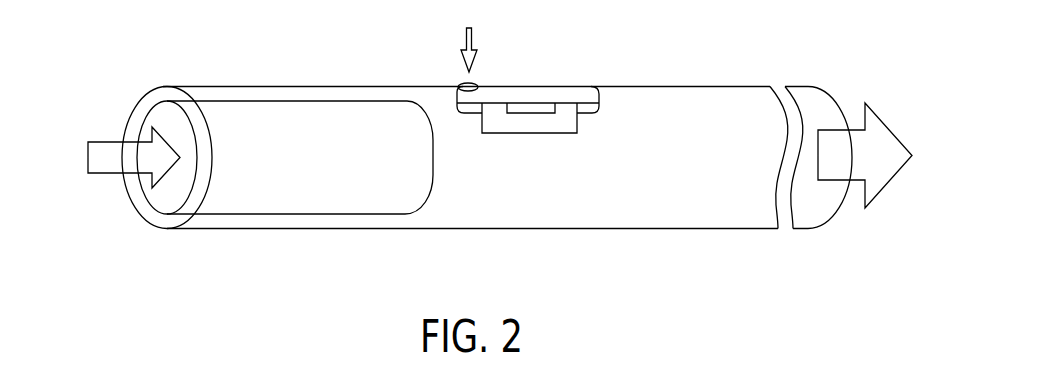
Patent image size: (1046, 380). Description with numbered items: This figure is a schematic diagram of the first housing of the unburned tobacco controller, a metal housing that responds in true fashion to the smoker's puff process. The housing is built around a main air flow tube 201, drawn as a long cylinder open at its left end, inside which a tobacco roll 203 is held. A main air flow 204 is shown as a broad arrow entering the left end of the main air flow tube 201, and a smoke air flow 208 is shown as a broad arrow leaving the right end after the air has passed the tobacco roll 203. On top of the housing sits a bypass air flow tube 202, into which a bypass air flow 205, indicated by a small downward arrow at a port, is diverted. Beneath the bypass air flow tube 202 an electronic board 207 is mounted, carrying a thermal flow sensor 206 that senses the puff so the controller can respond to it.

The main air flow tube 201 is at (460, 163).
The bypass air flow tube 202 is at (547, 96).
The tobacco roll 203 is at (292, 157).
The main air flow 204 is at (112, 160).
The bypass air flow 205 is at (468, 33).
The thermal flow sensor 206 is at (535, 108).
The electronic board 207 is at (505, 125).
The smoke air flow 208 is at (830, 157).